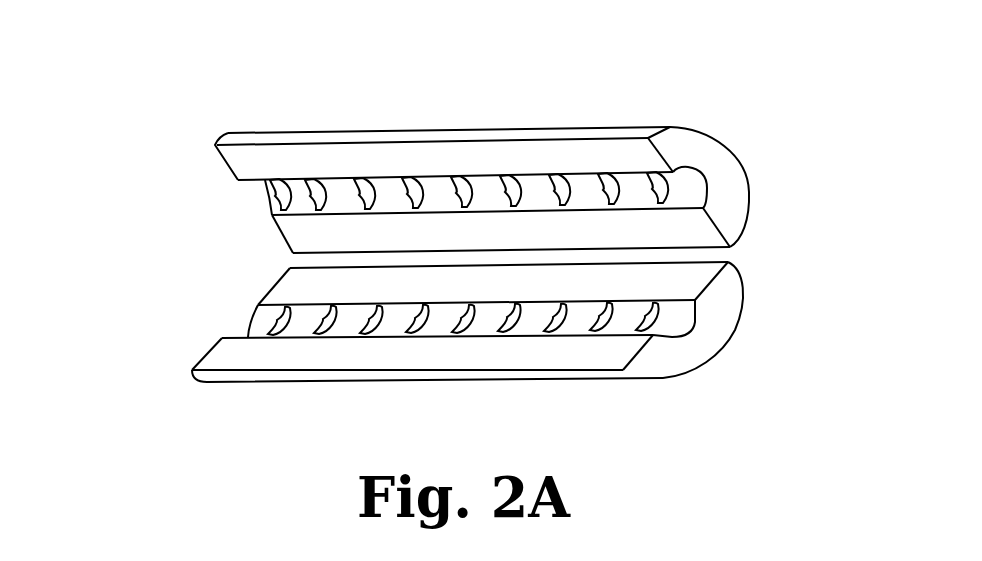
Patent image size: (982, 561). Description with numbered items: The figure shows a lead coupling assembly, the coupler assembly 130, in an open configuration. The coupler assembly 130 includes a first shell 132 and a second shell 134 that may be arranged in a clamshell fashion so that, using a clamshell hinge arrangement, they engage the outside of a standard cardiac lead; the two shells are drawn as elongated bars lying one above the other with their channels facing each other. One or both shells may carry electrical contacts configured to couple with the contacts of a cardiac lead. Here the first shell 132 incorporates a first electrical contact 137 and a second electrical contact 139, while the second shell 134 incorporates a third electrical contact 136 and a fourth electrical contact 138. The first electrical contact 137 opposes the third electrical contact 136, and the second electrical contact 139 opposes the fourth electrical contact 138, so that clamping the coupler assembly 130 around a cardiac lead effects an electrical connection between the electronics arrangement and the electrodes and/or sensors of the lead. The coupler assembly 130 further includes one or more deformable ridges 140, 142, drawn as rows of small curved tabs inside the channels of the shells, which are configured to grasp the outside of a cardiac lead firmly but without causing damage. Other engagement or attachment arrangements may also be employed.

The coupler assembly 130 is at (187, 98).
The first shell 132 is at (727, 134).
The second shell 134 is at (743, 283).
The third electrical contact 136 is at (480, 332).
The first electrical contact 137 is at (484, 184).
The fourth electrical contact 138 is at (571, 336).
The second electrical contact 139 is at (574, 183).
The deformable ridge 140 is at (411, 335).
The deformable ridge 142 is at (412, 182).